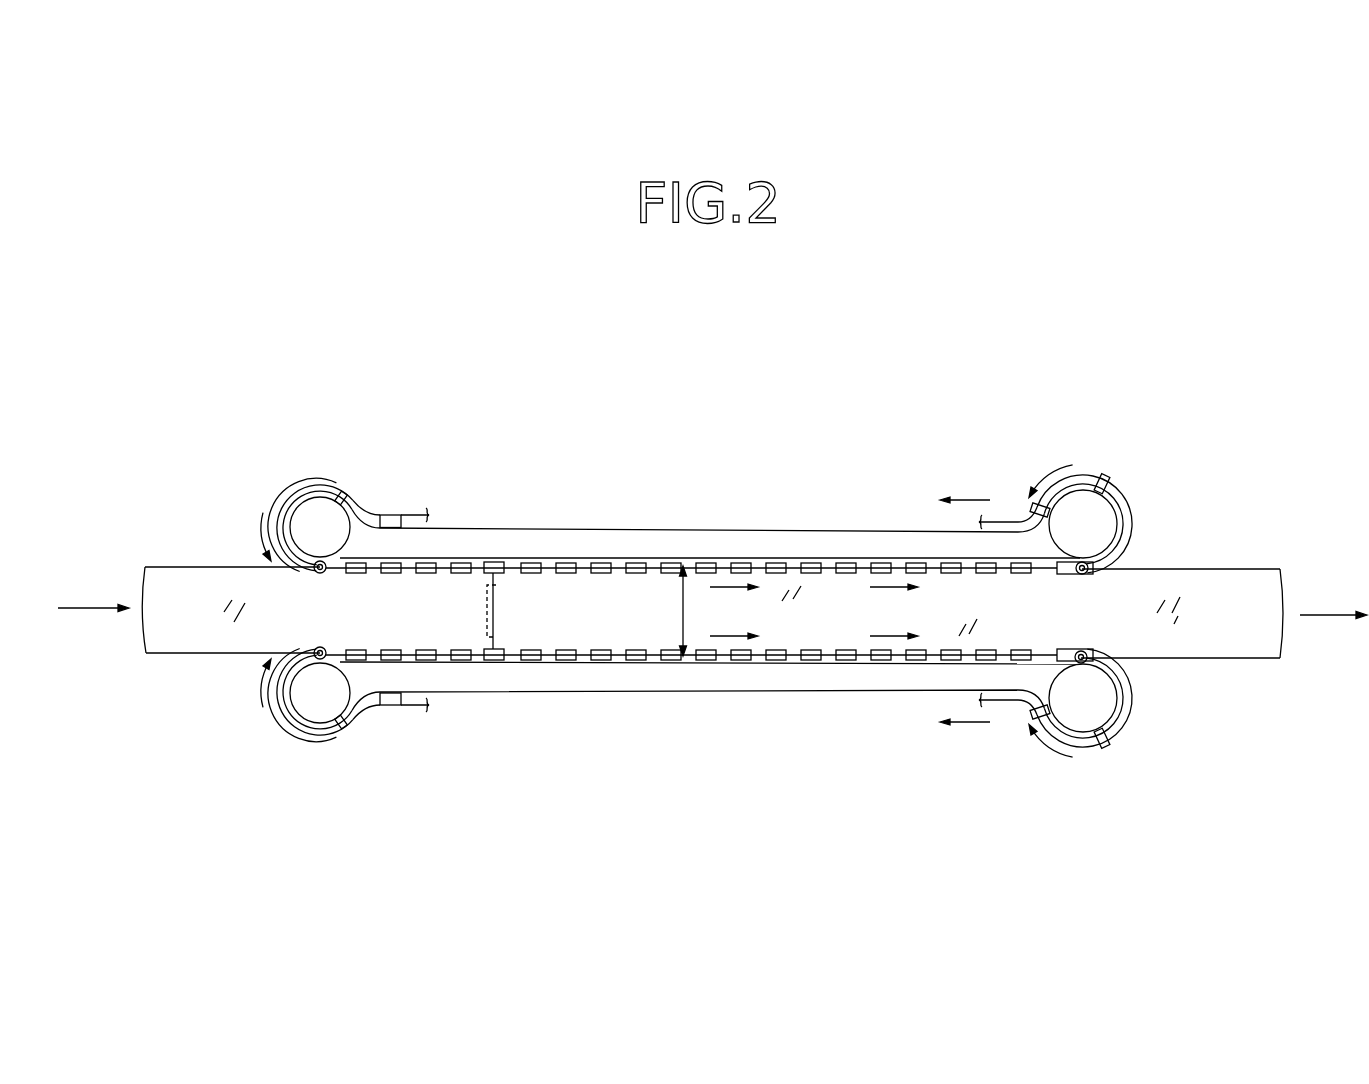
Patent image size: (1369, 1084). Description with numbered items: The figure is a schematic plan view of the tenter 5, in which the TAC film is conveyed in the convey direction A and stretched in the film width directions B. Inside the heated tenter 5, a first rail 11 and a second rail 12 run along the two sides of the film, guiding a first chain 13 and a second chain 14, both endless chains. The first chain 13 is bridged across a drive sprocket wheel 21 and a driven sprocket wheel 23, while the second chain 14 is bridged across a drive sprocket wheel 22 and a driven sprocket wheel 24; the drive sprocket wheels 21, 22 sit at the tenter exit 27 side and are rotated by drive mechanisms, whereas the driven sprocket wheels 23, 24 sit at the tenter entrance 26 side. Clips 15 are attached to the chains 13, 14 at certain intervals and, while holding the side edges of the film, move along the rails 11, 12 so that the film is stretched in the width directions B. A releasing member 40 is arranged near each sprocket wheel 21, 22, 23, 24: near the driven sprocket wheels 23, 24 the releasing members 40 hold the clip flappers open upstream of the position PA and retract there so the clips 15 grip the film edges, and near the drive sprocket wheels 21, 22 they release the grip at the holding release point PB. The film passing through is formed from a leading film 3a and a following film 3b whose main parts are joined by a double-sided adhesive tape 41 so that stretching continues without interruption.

The leading film 3a is at (1221, 581).
The following film 3b is at (164, 578).
The tenter 5 is at (718, 432).
The first rail 11 is at (805, 538).
The second rail 12 is at (805, 684).
The first chain 13 is at (408, 520).
The second chain 14 is at (408, 706).
The clips 15 is at (390, 573).
The drive sprocket wheel 21 is at (1100, 515).
The drive sprocket wheel 22 is at (1072, 728).
The driven sprocket wheel 23 is at (323, 517).
The driven sprocket wheel 24 is at (320, 703).
The tenter entrance 26 is at (252, 672).
The tenter exit 27 is at (1151, 676).
The releasing member 40 is at (300, 489).
The double-sided adhesive tape 41 is at (478, 610).
The convey direction A is at (80, 608).
The film width directions B is at (682, 611).
The position PA is at (328, 574).
The holding release point PB is at (1076, 574).